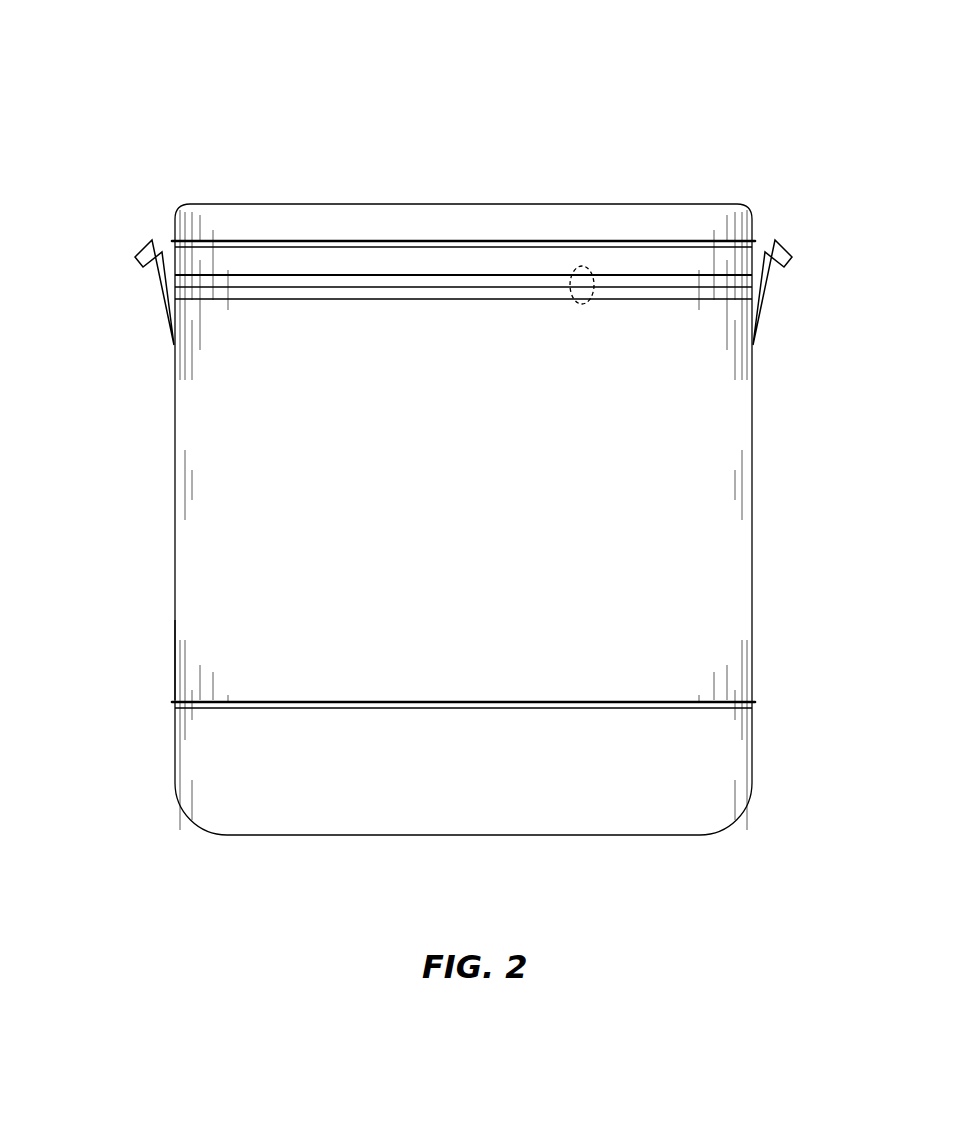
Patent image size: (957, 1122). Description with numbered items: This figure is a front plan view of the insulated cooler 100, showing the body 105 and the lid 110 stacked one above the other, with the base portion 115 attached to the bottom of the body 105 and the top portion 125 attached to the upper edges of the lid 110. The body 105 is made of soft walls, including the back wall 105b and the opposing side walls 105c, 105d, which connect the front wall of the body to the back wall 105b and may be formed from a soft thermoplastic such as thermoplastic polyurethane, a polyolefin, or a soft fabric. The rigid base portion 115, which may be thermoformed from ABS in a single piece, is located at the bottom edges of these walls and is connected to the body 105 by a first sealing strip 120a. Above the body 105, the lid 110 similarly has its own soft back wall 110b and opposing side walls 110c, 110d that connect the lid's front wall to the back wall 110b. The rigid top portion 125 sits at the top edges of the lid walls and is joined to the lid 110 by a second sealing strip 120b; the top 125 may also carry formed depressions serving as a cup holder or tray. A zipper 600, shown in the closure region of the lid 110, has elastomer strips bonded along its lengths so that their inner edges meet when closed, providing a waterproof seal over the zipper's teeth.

The insulated cooler 100 is at (463, 442).
The body 105 is at (141, 293).
The back wall 105b is at (472, 672).
The side wall 105c is at (170, 666).
The side wall 105d is at (758, 553).
The lid 110 is at (138, 201).
The back wall 110b is at (458, 265).
The side wall 110c is at (171, 256).
The side wall 110d is at (757, 258).
The base portion 115 is at (731, 831).
The first sealing strip 120a is at (753, 706).
The second sealing strip 120b is at (753, 243).
The top portion 125 is at (650, 205).
The zipper 600 is at (580, 305).